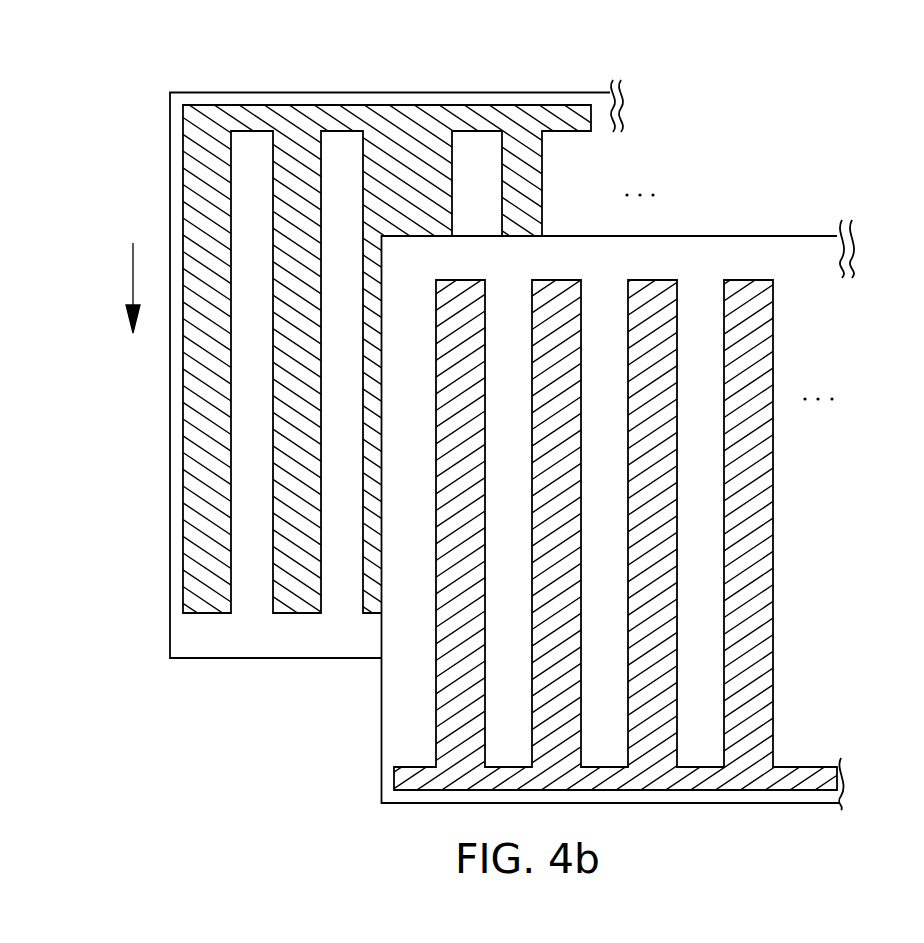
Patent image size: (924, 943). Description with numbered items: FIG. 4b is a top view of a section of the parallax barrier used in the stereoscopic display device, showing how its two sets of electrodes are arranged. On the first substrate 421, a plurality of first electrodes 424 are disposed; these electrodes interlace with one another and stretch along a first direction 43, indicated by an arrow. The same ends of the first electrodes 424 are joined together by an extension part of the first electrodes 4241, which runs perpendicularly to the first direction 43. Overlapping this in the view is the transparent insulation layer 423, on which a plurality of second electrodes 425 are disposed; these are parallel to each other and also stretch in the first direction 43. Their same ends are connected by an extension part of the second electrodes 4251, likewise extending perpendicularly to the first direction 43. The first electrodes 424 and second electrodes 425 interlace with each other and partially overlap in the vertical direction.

The first substrate 421 is at (387, 449).
The extension part of the first electrodes 4241 is at (247, 118).
The first electrodes 424 is at (203, 407).
The transparent insulation layer 423 is at (597, 471).
The second electrodes 425 is at (462, 727).
The extension part of the second electrodes 4251 is at (412, 778).
The first direction 43 is at (130, 281).